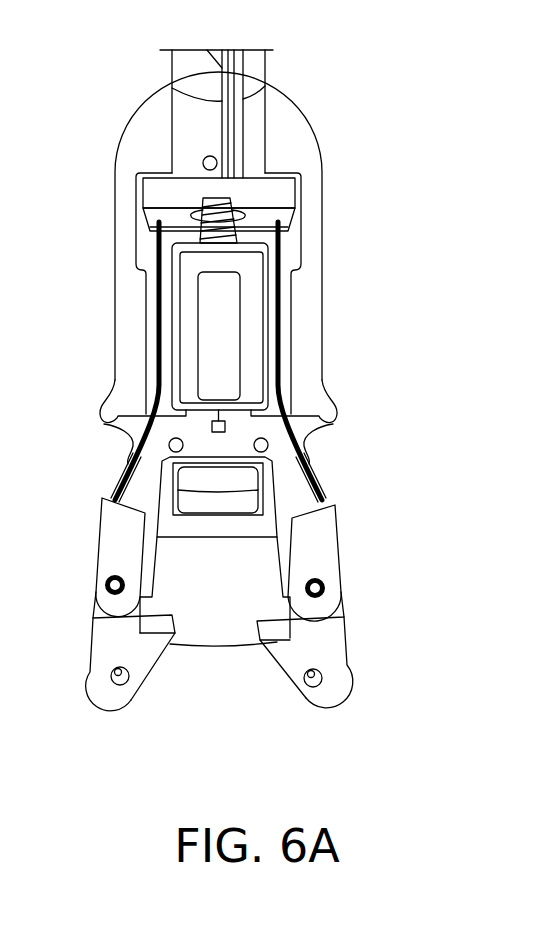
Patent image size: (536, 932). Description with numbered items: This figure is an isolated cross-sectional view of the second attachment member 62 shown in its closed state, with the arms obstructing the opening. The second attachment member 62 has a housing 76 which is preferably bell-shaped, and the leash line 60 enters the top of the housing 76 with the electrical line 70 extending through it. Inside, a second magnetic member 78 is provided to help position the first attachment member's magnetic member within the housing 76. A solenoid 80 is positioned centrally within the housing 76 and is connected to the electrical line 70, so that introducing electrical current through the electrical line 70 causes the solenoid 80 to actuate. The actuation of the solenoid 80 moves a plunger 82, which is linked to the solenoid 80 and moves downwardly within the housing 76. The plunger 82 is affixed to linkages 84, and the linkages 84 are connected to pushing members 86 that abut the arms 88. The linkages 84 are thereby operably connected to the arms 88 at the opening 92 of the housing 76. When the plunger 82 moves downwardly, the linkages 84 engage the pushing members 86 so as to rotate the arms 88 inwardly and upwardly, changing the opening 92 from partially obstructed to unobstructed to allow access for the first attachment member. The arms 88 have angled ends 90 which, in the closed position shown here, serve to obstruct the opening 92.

The leash line 60 is at (264, 62).
The second attachment member 62 is at (405, 198).
The electrical line 70 is at (243, 78).
The housing 76 is at (323, 340).
The second magnetic member 78 is at (256, 499).
The solenoid 80 is at (240, 304).
The plunger 82 is at (297, 176).
The linkages 84 is at (128, 462).
The pushing members 86 is at (117, 541).
The arms 88 is at (104, 645).
The angled ends 90 is at (167, 672).
The opening 92 is at (213, 645).